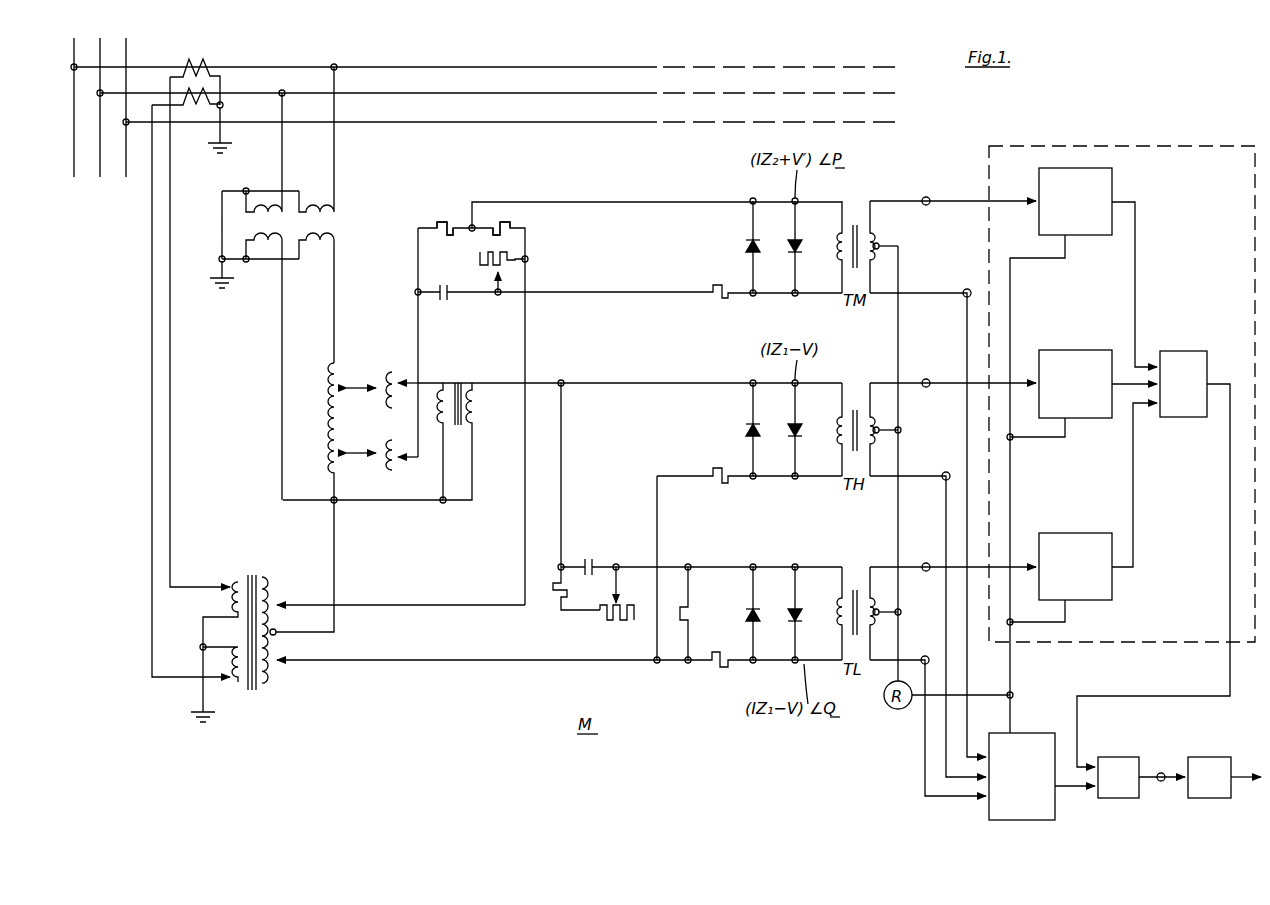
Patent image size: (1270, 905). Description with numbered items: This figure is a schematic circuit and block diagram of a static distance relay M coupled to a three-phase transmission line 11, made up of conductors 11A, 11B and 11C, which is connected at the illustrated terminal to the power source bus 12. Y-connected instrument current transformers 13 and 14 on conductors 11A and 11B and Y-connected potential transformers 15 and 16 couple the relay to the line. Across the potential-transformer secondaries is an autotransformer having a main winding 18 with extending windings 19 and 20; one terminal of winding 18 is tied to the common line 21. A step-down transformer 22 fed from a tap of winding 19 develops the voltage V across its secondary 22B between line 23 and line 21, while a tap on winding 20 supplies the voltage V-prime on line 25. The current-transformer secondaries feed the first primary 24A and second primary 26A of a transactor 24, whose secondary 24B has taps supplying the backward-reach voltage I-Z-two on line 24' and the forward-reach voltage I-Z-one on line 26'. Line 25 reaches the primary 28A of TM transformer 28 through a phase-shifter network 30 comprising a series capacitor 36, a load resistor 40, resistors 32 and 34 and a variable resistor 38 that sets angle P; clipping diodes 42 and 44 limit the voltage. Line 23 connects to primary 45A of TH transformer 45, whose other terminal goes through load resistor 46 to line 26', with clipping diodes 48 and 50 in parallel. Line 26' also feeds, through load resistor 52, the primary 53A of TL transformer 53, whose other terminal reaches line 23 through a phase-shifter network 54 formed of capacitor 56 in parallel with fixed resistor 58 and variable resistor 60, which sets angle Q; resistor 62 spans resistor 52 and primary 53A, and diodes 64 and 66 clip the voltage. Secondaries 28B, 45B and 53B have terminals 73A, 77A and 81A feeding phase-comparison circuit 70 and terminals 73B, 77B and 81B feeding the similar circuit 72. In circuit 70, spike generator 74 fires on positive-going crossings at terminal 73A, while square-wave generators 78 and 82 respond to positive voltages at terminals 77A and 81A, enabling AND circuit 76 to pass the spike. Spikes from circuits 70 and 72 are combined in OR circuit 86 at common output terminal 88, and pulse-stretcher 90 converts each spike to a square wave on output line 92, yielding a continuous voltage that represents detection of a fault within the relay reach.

The transmission line 11 is at (408, 58).
The phase conductor 11A is at (598, 67).
The phase conductor 11B is at (598, 93).
The phase conductor 11C is at (598, 122).
The power source bus 12 is at (108, 200).
The instrument current transformer 13 is at (198, 62).
The instrument current transformer 14 is at (213, 93).
The instrument potential transformer 15 is at (328, 215).
The instrument potential transformer 16 is at (259, 296).
The main winding of autotransformer 18 is at (326, 422).
The extending winding 19 is at (392, 372).
The extending winding 20 is at (392, 470).
The common line 21 is at (334, 546).
The step down transformer 22 is at (466, 381).
The secondary of step down transformer 22B is at (477, 414).
The V line 23 is at (622, 382).
The transactor 24 is at (252, 619).
The first primary of transactor 24A is at (232, 604).
The secondary winding of transactor 24B is at (274, 582).
The IZ2 line 24' is at (401, 591).
The V' line 25 is at (418, 302).
The IZ1 line 26' is at (559, 677).
The second primary of transactor 26A is at (240, 684).
The TM transformer 28 is at (866, 223).
The primary of TM transformer 28A is at (836, 256).
The secondary of TM transformer 28B is at (876, 241).
The phase-shifter network 30 is at (472, 267).
The resistor 32 is at (440, 221).
The resistor 34 is at (506, 222).
The series capacitor 36 is at (449, 302).
The variable resistor 38 is at (514, 253).
The load resistor 40 is at (718, 300).
The voltage regulating diode 42 is at (746, 247).
The voltage regulating diode 44 is at (796, 242).
The TH transformer 45 is at (866, 407).
The primary of TH transformer 45A is at (836, 440).
The secondary of TH transformer 45B is at (876, 423).
The load resistor 46 is at (718, 482).
The clipping diode 48 is at (746, 432).
The clipping diode 50 is at (800, 425).
The load resistor 52 is at (718, 668).
The TL transformer 53 is at (866, 588).
The primary of TL transformer 53A is at (836, 625).
The secondary of TL transformer 53B is at (876, 606).
The replica impedance network 54 is at (585, 633).
The capacitor 56 is at (592, 564).
The fixed resistor 58 is at (558, 592).
The variable resistor 60 is at (620, 620).
The resistor 62 is at (688, 610).
The clipping diode 64 is at (746, 618).
The clipping diode 66 is at (800, 610).
The static signal-combining and phase-comparison circuit 70 is at (1142, 146).
The static signal-combining and phase-comparison circuit 72 is at (1032, 787).
The terminal of TM secondary 73A is at (926, 197).
The output terminal 73B is at (967, 289).
The spike generator 74 is at (1086, 235).
The AND circuit 76 is at (1186, 351).
The terminal of TH secondary 77A is at (926, 379).
The output terminal 77B is at (946, 472).
The square-wave generator 78 is at (1086, 418).
The terminal of TL secondary 81A is at (922, 563).
The output terminal 81B is at (924, 656).
The second square-wave generator 82 is at (1086, 600).
The OR circuit 86 is at (1120, 757).
The common output terminal 88 is at (1161, 781).
The pulse-stretcher circuit 90 is at (1211, 757).
The output line 92 is at (1240, 778).